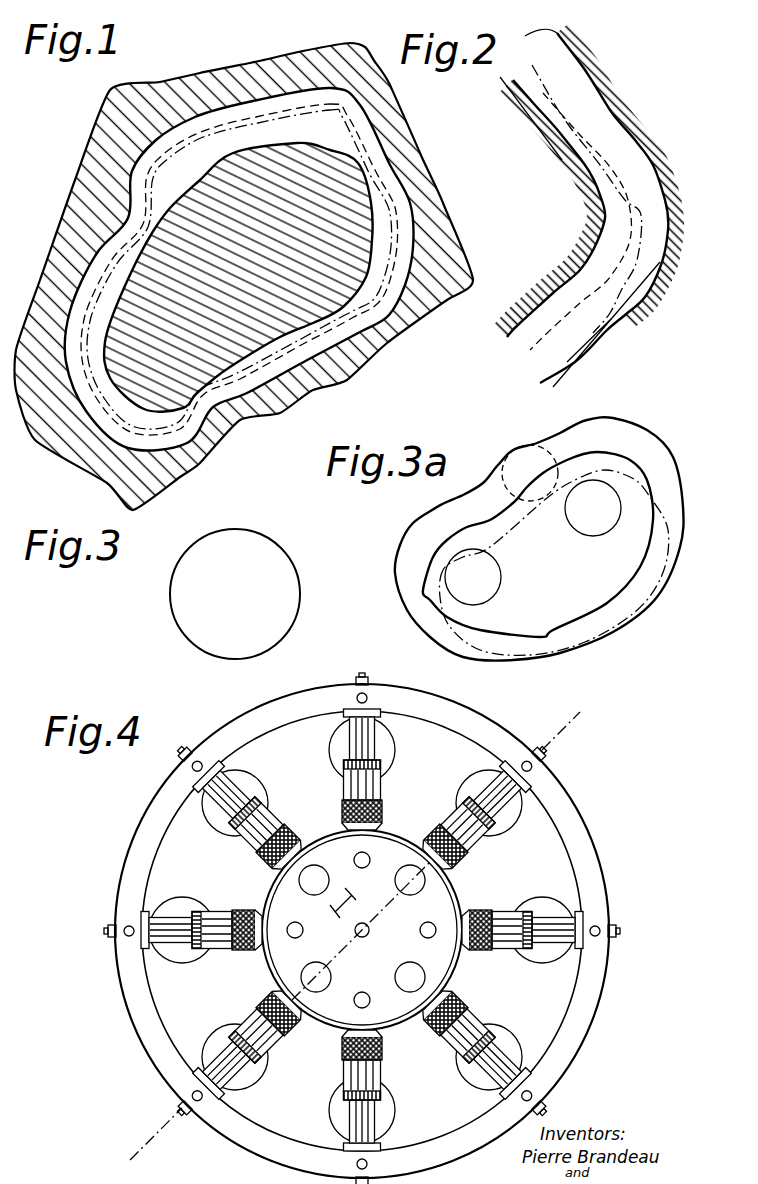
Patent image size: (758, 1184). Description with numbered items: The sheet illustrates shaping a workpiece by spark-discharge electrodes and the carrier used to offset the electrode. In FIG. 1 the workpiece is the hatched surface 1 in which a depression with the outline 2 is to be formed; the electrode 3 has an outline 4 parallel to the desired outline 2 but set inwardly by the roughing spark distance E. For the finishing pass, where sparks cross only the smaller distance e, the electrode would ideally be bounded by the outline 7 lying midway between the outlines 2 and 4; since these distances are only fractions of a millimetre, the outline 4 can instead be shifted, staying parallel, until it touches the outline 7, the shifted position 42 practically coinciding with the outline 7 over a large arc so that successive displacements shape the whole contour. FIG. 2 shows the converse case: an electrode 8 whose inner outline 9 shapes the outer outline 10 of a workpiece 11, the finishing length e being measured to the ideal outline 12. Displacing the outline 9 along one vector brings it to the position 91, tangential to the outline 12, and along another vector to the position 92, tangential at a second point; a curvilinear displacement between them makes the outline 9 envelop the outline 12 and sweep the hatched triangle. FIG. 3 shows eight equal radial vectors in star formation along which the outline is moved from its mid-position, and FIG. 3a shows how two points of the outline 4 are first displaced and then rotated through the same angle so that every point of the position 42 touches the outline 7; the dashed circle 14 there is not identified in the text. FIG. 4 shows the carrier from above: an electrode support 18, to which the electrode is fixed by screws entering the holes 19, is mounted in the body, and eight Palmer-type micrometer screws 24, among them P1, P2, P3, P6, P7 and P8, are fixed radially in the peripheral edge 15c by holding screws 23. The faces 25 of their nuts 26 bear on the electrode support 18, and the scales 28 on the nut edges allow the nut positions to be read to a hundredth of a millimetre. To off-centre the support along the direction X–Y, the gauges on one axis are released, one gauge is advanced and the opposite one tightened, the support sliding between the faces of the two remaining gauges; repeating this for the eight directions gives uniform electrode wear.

In FIG. 1, the workpiece 1 is at (293, 72).
In FIG. 1, the outline of the depression 2 is at (386, 162).
In FIG. 1, the electrode 3 is at (249, 163).
In FIG. 1, the electrode outline 4 is at (160, 132).
In FIG. 3A, the electrode outline 4 is at (648, 470).
In FIG. 1, the displaced electrode outline position (4a) 42 is at (112, 157).
In FIG. 3A, the displaced electrode outline position (4a) 42 is at (668, 560).
In FIG. 1, the finishing outline 7 is at (372, 375).
In FIG. 3A, the finishing outline 7 is at (640, 424).
In FIG. 2, the electrode 8 is at (660, 270).
In FIG. 2, the inner outline of the electrode 9 is at (663, 224).
In FIG. 2, the displaced outline position 91 is at (643, 311).
In FIG. 2, the displaced outline position 92 is at (655, 165).
In FIG. 2, the outer outline of the workpiece 10 is at (590, 257).
In FIG. 2, the workpiece 11 is at (600, 237).
In FIG. 2, the ideal outline 12 is at (632, 223).
In FIG. 3A, the milling cutter 14 is at (500, 465).
In FIG. 4, the peripheral edge of the body 15c is at (585, 1002).
In FIG. 4, the electrode support 18 is at (445, 955).
In FIG. 4, the holes 19 is at (402, 975).
In FIG. 4, the holding screws 23 is at (600, 928).
In FIG. 4, the micrometer screws 24 is at (236, 782).
In FIG. 4, the faces of the nuts 25 is at (358, 861).
In FIG. 4, the nuts 26 is at (476, 817).
In FIG. 4, the scales 28 is at (522, 930).
In FIG. 4, the micrometer gauge P1 is at (201, 930).
In FIG. 4, the micrometer gauge P2 is at (249, 817).
In FIG. 4, the micrometer gauge P3 is at (362, 769).
In FIG. 4, the micrometer gauge P6 is at (476, 1044).
In FIG. 4, the micrometer gauge P7 is at (362, 1090).
In FIG. 4, the micrometer gauge P8 is at (249, 1044).